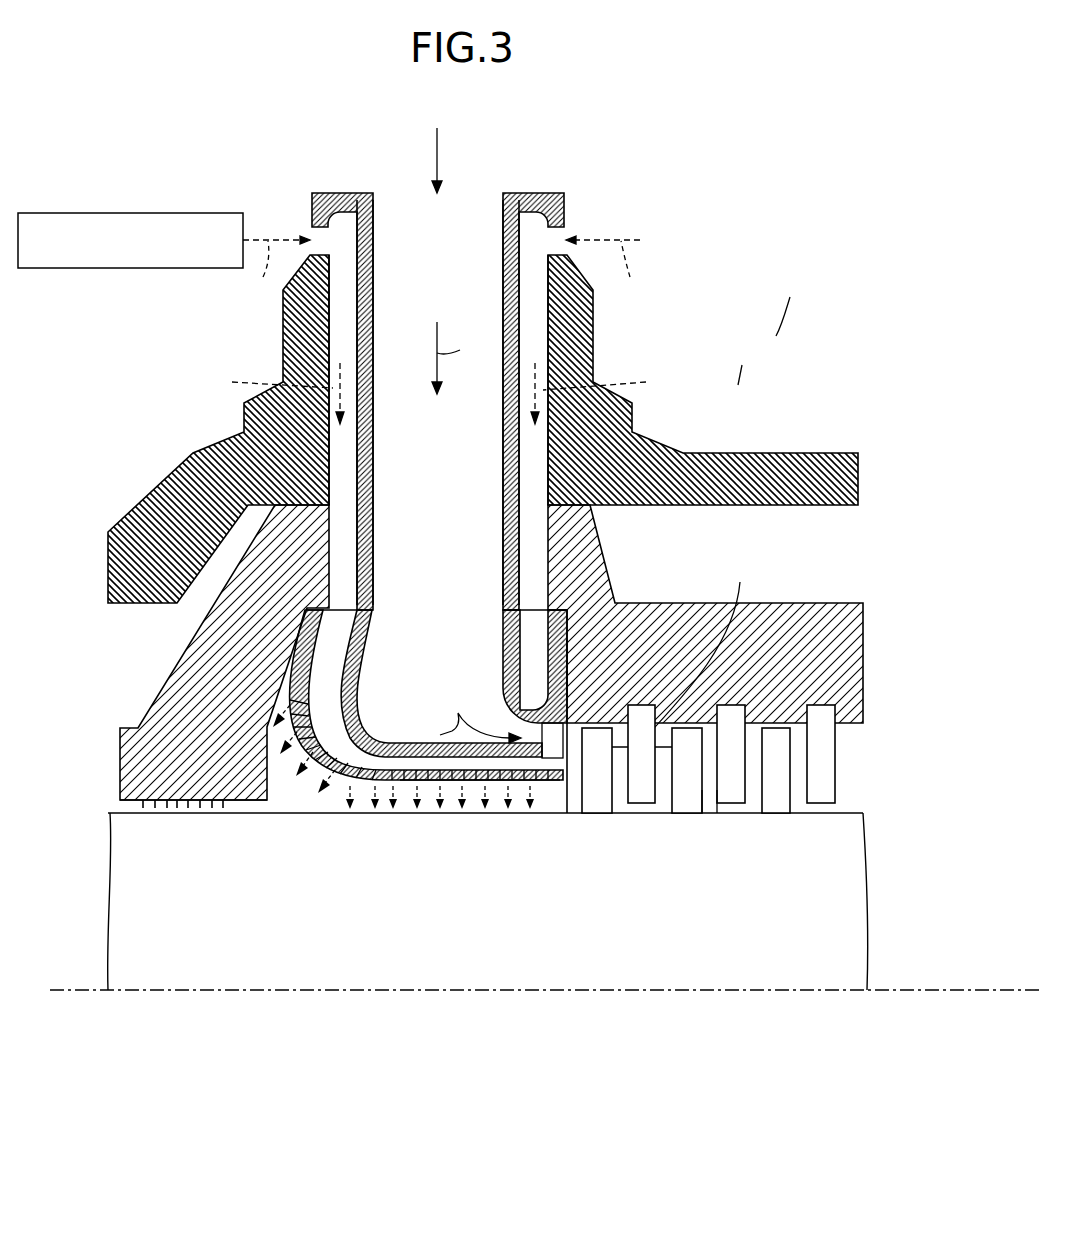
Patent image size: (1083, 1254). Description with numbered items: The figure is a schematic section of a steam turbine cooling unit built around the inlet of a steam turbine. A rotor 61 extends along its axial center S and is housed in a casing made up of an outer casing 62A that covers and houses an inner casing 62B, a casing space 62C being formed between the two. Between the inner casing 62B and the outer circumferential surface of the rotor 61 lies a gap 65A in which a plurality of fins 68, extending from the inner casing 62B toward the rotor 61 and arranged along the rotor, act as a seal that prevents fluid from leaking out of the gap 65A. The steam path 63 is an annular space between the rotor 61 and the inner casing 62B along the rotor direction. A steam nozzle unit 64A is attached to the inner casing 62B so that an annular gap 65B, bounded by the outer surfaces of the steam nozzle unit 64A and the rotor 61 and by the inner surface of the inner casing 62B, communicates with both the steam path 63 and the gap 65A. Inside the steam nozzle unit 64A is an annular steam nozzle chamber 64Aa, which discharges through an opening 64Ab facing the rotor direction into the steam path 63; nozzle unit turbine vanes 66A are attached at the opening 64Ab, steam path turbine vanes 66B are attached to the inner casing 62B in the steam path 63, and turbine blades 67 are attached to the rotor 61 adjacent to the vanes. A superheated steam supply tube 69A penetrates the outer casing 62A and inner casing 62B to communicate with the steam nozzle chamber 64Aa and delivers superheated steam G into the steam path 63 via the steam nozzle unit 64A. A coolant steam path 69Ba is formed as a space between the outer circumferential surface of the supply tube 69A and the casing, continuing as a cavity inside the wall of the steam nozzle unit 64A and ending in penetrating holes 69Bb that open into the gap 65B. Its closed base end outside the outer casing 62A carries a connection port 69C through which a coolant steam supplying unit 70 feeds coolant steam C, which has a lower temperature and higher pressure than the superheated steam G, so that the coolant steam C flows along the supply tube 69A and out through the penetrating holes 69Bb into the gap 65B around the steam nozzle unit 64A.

The coolant steam supplying unit 70 is at (78, 190).
The connection port 69C is at (317, 230).
The superheated steam supply tube 69A is at (513, 272).
The coolant steam path 69Ba is at (343, 317).
The penetrating holes 69Bb is at (405, 783).
The outer casing 62A is at (143, 527).
The inner casing 62B is at (162, 715).
The casing space 62C is at (745, 527).
The steam nozzle unit 64A is at (490, 645).
The steam nozzle chamber 64Aa is at (463, 666).
The opening 64Ab is at (573, 733).
The fins 68 is at (120, 800).
The rotor 61 is at (143, 890).
The gap 65A is at (243, 804).
The gap 65B is at (473, 783).
The nozzle unit turbine vanes 66A is at (558, 786).
The steam path turbine vanes 66B is at (642, 788).
The turbine blades 67 is at (595, 797).
The steam path 63 is at (708, 808).
The axial center S is at (148, 992).
The superheated steam G is at (585, 425).
The coolant steam C is at (439, 330).